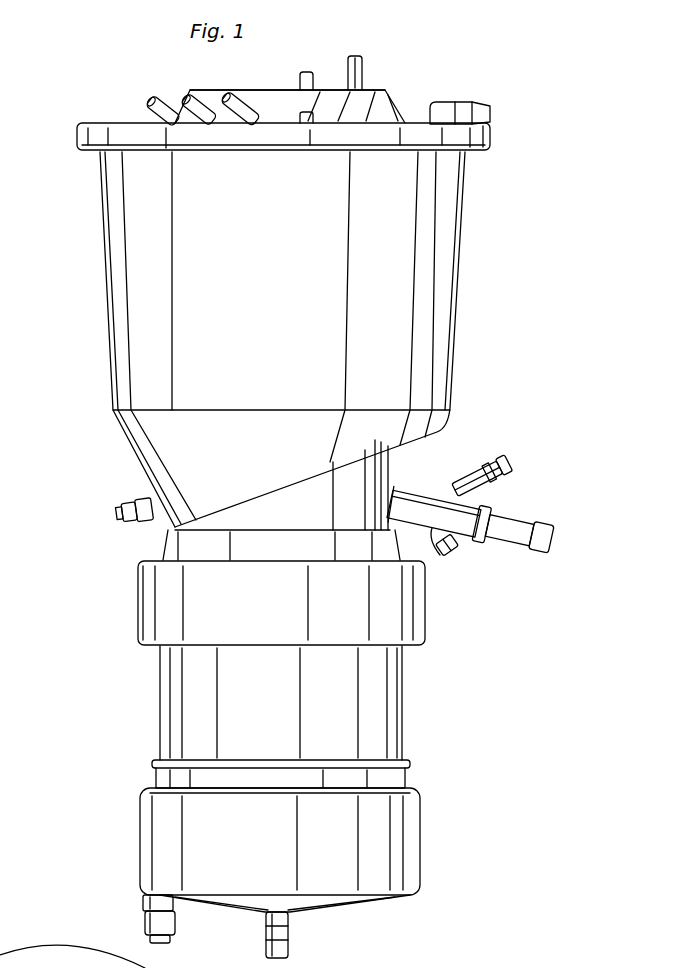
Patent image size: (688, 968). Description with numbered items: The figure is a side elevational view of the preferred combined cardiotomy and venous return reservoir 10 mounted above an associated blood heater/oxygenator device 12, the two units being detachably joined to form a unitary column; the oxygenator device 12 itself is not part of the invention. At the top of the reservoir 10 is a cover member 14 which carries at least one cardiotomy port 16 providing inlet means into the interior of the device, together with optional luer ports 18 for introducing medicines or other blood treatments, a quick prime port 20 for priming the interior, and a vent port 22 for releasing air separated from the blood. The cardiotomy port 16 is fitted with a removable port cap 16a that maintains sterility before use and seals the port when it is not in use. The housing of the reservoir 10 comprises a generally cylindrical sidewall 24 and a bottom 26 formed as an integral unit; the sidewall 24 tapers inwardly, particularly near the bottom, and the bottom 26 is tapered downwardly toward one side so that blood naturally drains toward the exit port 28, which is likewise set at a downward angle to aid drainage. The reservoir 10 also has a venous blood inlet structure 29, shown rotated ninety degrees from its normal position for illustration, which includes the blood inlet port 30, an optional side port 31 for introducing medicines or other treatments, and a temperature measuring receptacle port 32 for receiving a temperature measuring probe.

The combined cardiotomy and venous return reservoir 10 is at (488, 268).
The blood heater/oxygenator device 12 is at (430, 712).
The cover member 14 is at (418, 120).
The cardiotomy port 16 is at (226, 90).
The port cap 16a is at (28, 967).
The luer ports 18 is at (306, 73).
The quick prime port 20 is at (362, 70).
The vent port 22 is at (455, 103).
The sidewall 24 is at (107, 283).
The bottom 26 is at (262, 488).
The exit port 28 is at (125, 505).
The venous blood inlet structure 29 is at (432, 545).
The blood inlet port 30 is at (552, 522).
The side port 31 is at (460, 548).
The temperature measuring receptacle port 32 is at (495, 470).